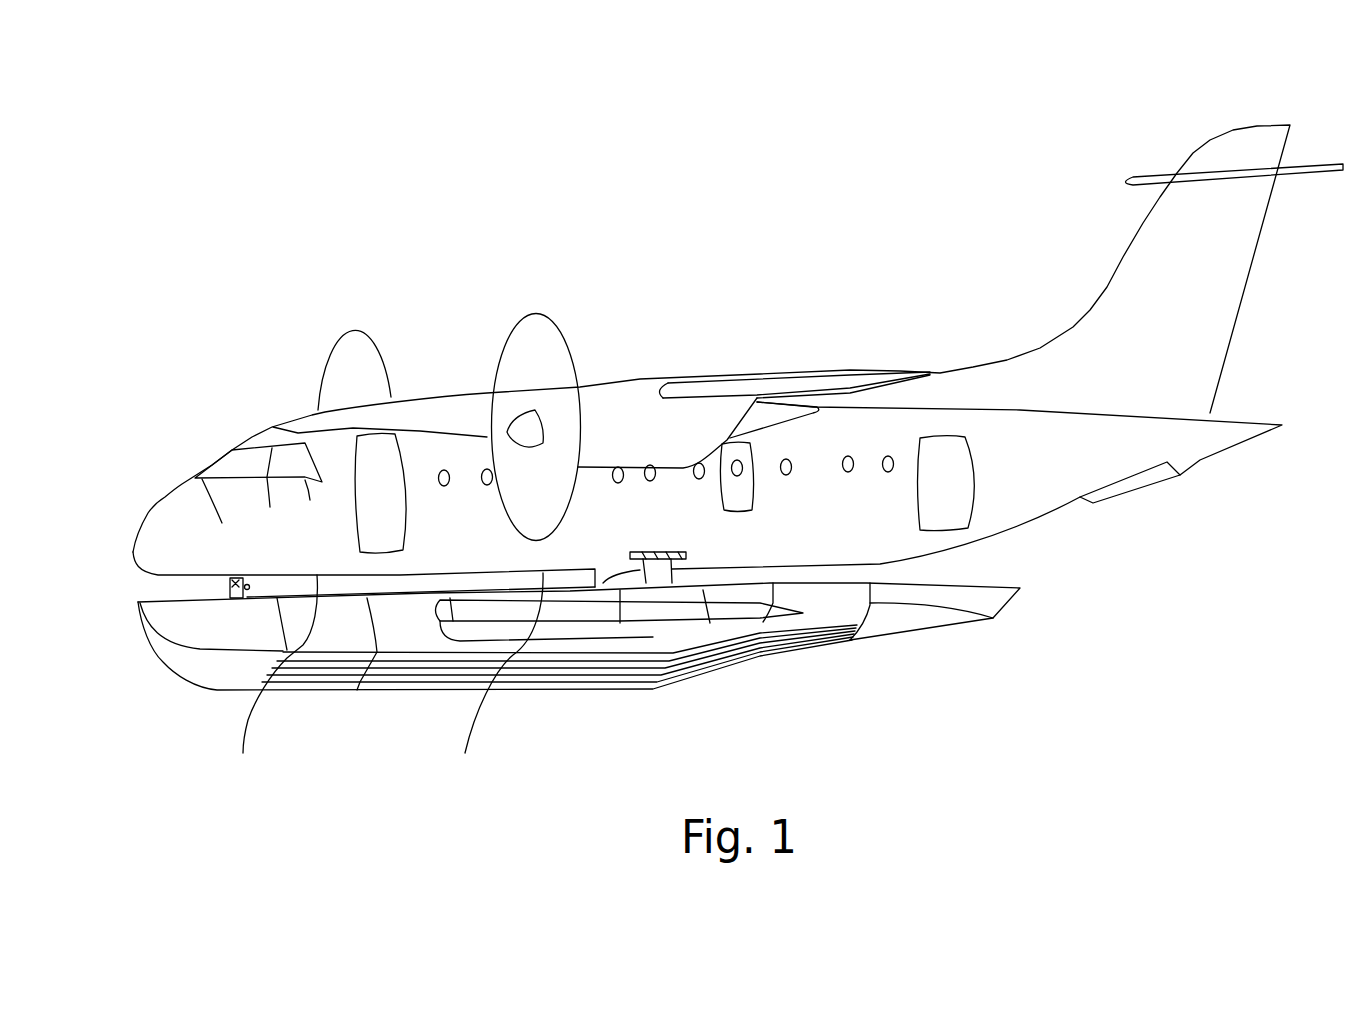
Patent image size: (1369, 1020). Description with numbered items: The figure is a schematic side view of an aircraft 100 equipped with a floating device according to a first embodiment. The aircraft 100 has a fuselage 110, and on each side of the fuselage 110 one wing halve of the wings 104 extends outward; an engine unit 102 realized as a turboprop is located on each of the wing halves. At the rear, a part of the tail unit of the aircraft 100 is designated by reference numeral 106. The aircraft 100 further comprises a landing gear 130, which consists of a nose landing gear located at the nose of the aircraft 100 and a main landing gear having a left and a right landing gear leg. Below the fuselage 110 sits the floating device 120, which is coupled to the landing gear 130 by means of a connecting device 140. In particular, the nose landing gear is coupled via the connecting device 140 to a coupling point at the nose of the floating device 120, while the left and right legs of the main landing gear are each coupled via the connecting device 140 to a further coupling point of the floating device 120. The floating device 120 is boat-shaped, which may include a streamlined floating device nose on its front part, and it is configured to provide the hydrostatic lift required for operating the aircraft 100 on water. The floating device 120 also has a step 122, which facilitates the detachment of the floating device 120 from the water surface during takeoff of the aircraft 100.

The aircraft 100 is at (573, 191).
The engine units 102 is at (537, 313).
The wings 104 is at (800, 372).
The tail unit 106 is at (1143, 178).
The fuselage 110 is at (382, 678).
The floating device 120 is at (152, 685).
The step 122 is at (670, 675).
The landing gear 130 is at (228, 591).
The connecting device 140 is at (677, 575).